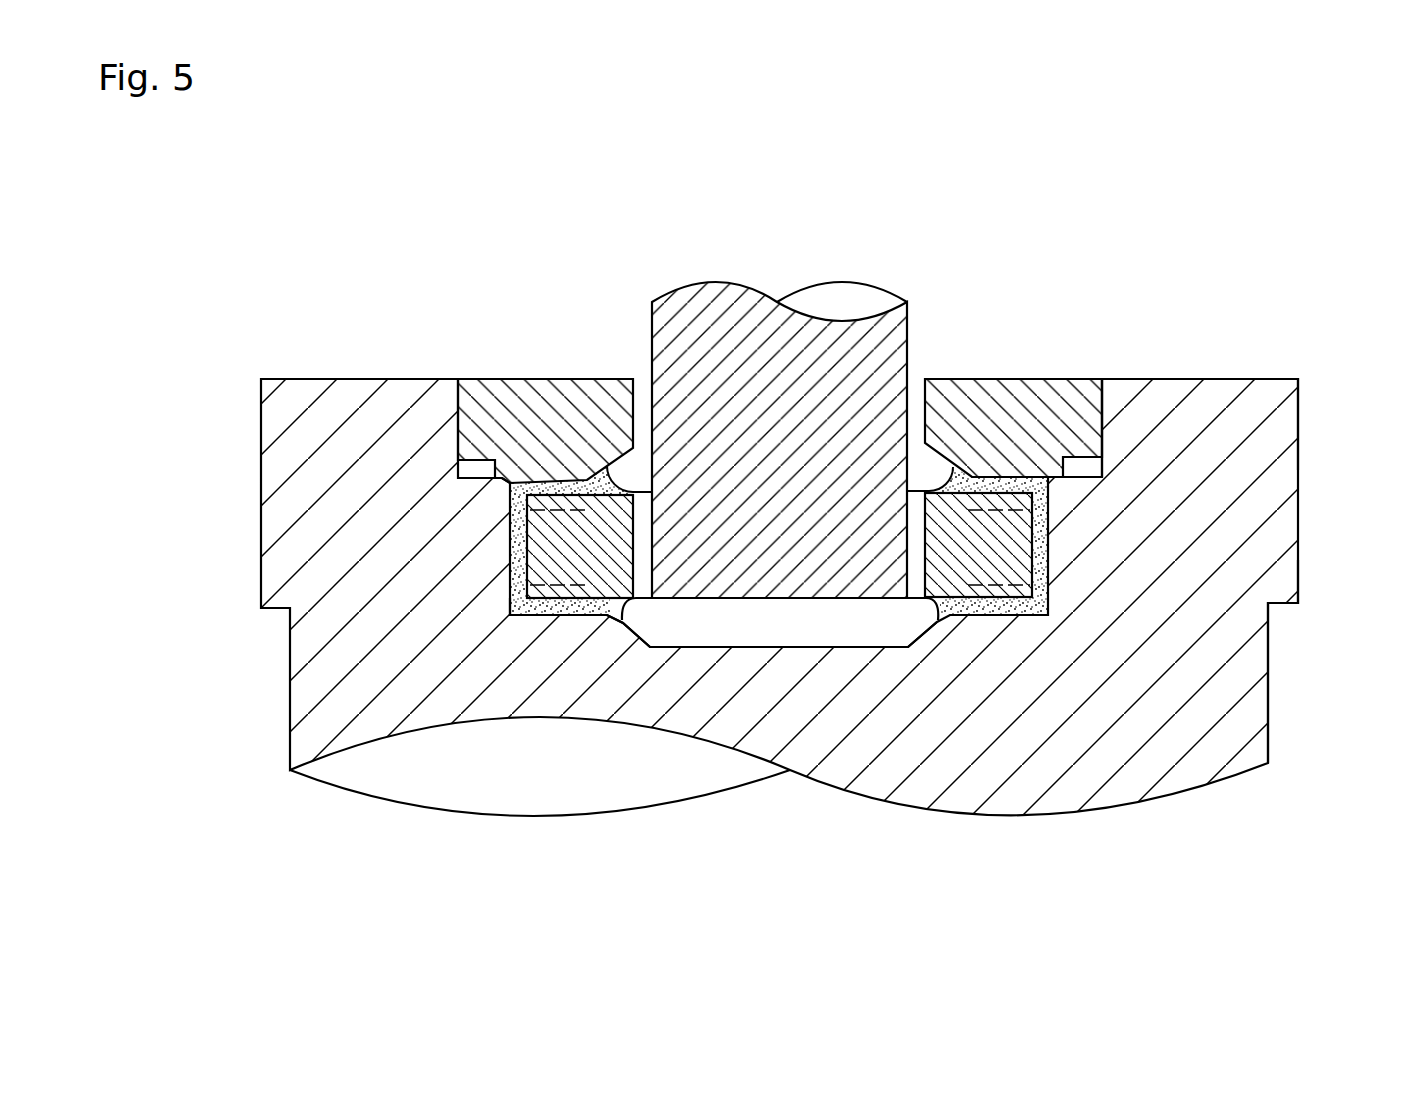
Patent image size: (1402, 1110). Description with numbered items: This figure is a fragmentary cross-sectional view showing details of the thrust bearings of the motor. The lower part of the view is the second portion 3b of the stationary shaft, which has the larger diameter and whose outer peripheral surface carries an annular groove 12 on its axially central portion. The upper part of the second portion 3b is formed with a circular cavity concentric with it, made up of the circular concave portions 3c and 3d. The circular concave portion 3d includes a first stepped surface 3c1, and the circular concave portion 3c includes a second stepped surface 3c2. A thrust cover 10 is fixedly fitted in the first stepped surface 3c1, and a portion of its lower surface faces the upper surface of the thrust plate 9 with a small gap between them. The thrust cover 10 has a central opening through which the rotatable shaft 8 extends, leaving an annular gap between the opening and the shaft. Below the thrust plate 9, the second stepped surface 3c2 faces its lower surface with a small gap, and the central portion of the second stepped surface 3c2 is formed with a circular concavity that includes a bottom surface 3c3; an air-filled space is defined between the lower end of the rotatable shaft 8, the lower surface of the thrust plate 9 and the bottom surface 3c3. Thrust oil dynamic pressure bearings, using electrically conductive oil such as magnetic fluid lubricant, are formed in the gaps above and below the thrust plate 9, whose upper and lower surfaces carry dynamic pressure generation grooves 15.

The second portion 3b is at (1283, 589).
The circular concave portion 3c is at (1050, 543).
The first stepped surface 3c1 is at (478, 470).
The second stepped surface 3c2 is at (588, 576).
The bottom surface 3c3 is at (812, 634).
The circular concave portion 3d is at (1103, 417).
The rotatable shaft 8 is at (866, 357).
The thrust plate 9 is at (1005, 533).
The thrust cover 10 is at (1005, 400).
The annular groove 12 is at (1269, 684).
The dynamic pressure generation grooves 15 is at (550, 512).